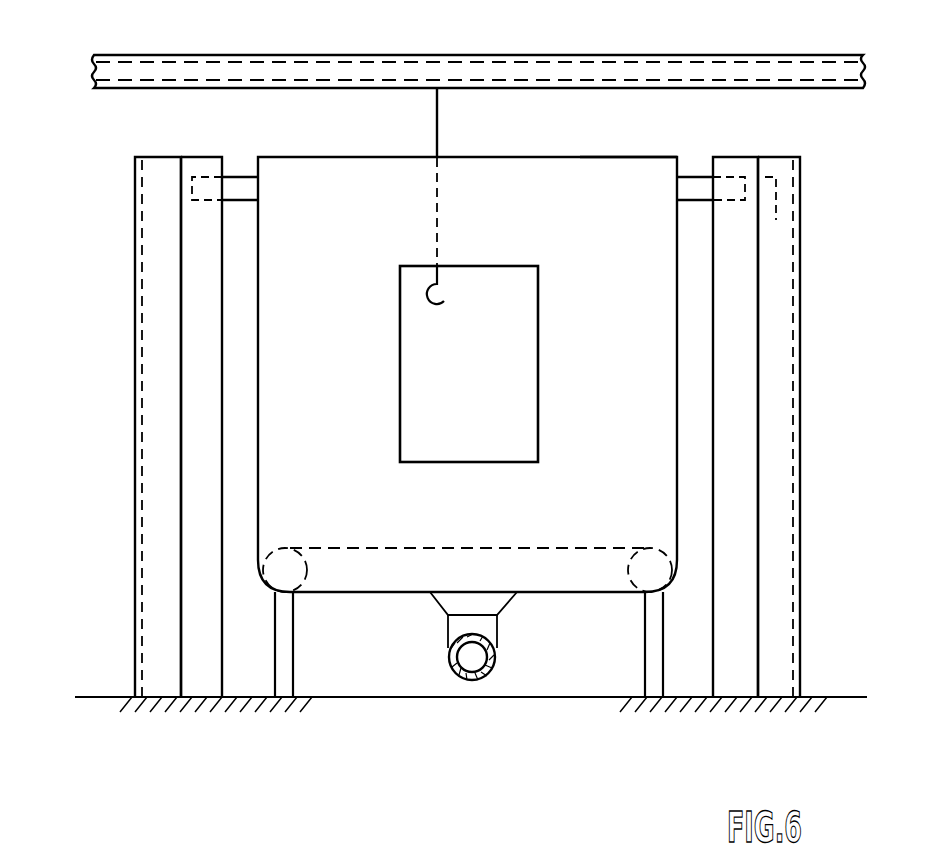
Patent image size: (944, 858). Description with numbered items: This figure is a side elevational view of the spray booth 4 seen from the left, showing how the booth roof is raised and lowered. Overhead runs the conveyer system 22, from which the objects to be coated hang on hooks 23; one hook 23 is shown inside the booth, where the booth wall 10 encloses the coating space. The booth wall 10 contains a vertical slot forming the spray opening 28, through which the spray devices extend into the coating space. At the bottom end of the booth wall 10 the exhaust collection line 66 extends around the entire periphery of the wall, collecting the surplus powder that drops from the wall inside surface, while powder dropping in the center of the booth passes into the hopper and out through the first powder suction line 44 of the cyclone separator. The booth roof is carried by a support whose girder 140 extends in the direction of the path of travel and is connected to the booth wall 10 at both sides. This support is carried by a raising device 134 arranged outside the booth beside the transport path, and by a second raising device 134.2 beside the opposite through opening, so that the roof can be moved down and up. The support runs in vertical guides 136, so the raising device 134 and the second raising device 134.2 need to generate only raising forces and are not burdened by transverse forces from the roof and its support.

The booth 4 is at (601, 168).
The booth wall 10 is at (517, 180).
The conveyer system 22 is at (707, 62).
The hooks 23 is at (436, 117).
The spray opening 28 is at (423, 374).
The first powder suction line 44 is at (494, 652).
The exhaust collection line 66 is at (271, 578).
The raising device 134 is at (733, 683).
The second raising device 134.2 is at (201, 683).
The vertical guides 136 is at (162, 683).
The girder 140 is at (239, 185).